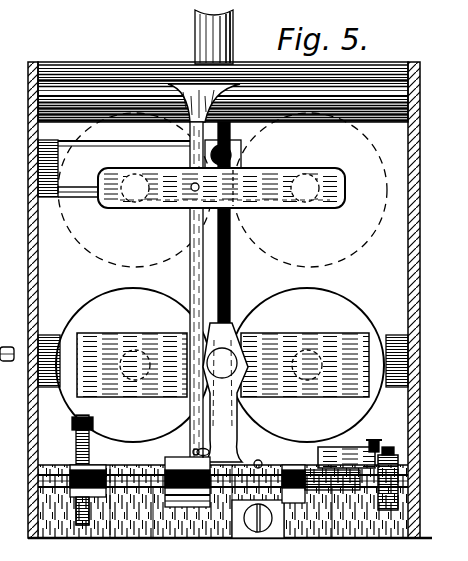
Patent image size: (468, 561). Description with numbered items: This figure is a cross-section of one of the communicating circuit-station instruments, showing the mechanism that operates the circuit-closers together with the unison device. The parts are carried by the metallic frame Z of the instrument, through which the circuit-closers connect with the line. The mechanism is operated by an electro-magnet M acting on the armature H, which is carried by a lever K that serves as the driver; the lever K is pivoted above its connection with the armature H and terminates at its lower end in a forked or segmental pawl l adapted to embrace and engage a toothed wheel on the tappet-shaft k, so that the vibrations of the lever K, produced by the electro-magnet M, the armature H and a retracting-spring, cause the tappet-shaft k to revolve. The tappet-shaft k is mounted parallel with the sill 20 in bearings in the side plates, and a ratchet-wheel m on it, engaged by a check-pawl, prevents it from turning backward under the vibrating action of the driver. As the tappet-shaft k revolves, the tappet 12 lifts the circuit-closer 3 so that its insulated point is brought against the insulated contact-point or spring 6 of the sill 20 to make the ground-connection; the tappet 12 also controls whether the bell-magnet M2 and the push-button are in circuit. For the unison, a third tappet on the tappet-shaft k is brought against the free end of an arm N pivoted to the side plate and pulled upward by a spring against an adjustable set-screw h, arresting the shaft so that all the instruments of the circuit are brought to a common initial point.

The metallic frame Z is at (224, 300).
The electro-magnet M is at (222, 190).
The bell-magnet M2 is at (220, 365).
The lever K is at (187, 292).
The armature H is at (221, 188).
The forked or segmental pawl l is at (225, 392).
The tappet-shaft k is at (223, 473).
The adjustable set-screw h is at (85, 470).
The arm N is at (88, 495).
The sill 20 is at (189, 490).
The ratchet-wheel m is at (338, 494).
The tappet 12 is at (346, 457).
The insulated contact-point or spring 6 is at (373, 438).
The circuit-closer 3 is at (383, 450).